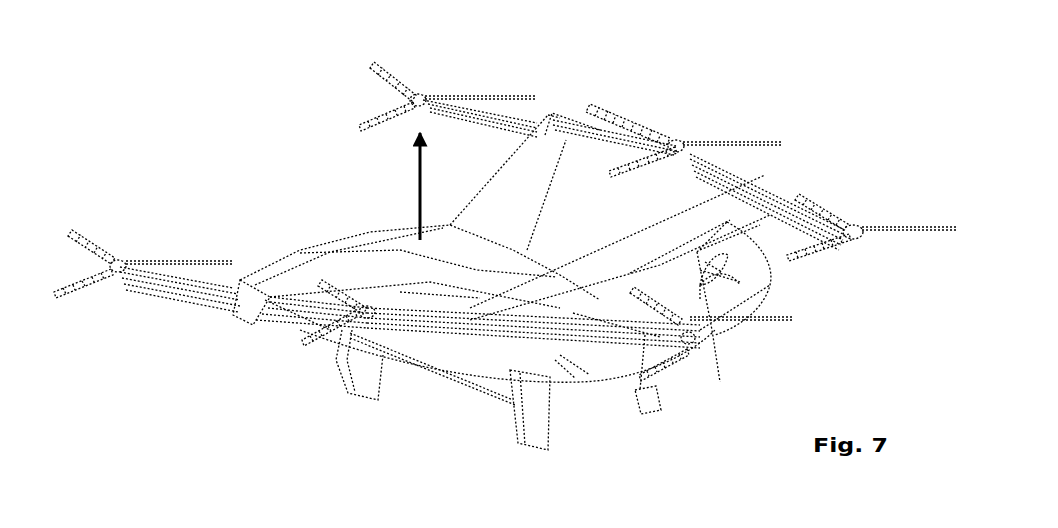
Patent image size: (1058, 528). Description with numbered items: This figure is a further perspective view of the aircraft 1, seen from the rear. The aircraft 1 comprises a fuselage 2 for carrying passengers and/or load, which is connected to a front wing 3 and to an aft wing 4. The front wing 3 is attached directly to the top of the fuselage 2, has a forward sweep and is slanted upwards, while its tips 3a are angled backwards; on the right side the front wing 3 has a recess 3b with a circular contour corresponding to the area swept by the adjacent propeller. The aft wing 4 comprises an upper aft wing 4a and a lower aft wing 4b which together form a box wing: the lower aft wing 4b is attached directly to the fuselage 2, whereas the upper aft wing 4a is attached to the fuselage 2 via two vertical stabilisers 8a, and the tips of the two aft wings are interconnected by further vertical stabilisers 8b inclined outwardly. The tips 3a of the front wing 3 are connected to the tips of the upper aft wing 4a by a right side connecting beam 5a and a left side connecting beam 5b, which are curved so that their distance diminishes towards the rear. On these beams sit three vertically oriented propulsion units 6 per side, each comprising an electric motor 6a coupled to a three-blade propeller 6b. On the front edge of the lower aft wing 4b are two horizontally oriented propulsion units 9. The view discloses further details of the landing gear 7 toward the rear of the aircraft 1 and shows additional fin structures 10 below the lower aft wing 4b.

The aircraft 1 is at (270, 157).
The fuselage 2 is at (380, 242).
The front wing 3 is at (484, 222).
The tips of front wing 3a is at (588, 108).
The recess 3b is at (568, 137).
The aft wing 4 is at (790, 290).
The upper aft wing 4a is at (562, 284).
The lower aft wing 4b is at (722, 330).
The right side connecting beam 5a is at (502, 123).
The left side connecting beam 5b is at (218, 290).
The propulsion unit 6 is at (378, 95).
The electric motor 6a is at (124, 268).
The propeller 6b is at (100, 281).
The landing gear 7 is at (367, 362).
The vertical stabilisers 8a is at (673, 288).
The further vertical stabilisers 8b is at (747, 240).
The horizontally oriented propulsion unit 9 is at (695, 265).
The fin structures 10 is at (653, 393).